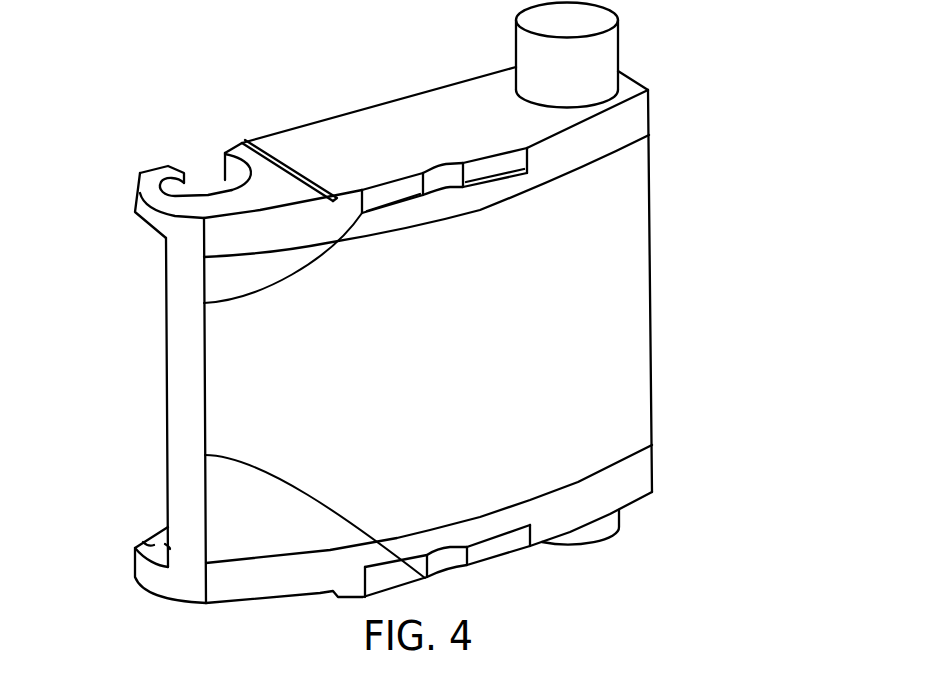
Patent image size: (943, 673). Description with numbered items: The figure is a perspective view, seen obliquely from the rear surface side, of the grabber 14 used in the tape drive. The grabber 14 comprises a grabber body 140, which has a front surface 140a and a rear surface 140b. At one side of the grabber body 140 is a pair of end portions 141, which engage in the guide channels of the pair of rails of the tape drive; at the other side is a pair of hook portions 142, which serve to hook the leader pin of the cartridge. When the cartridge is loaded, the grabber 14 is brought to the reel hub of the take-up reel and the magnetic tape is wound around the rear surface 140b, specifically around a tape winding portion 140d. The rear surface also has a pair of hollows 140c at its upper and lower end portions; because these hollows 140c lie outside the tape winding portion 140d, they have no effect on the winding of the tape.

The grabber 14 is at (656, 300).
The grabber body 140 is at (343, 150).
The front surface 140a is at (430, 91).
The rear surface 140b is at (620, 133).
The hollows 140c is at (204, 303).
The tape winding portion 140d is at (503, 203).
The end portions 141 is at (597, 63).
The hook portions 142 is at (140, 183).